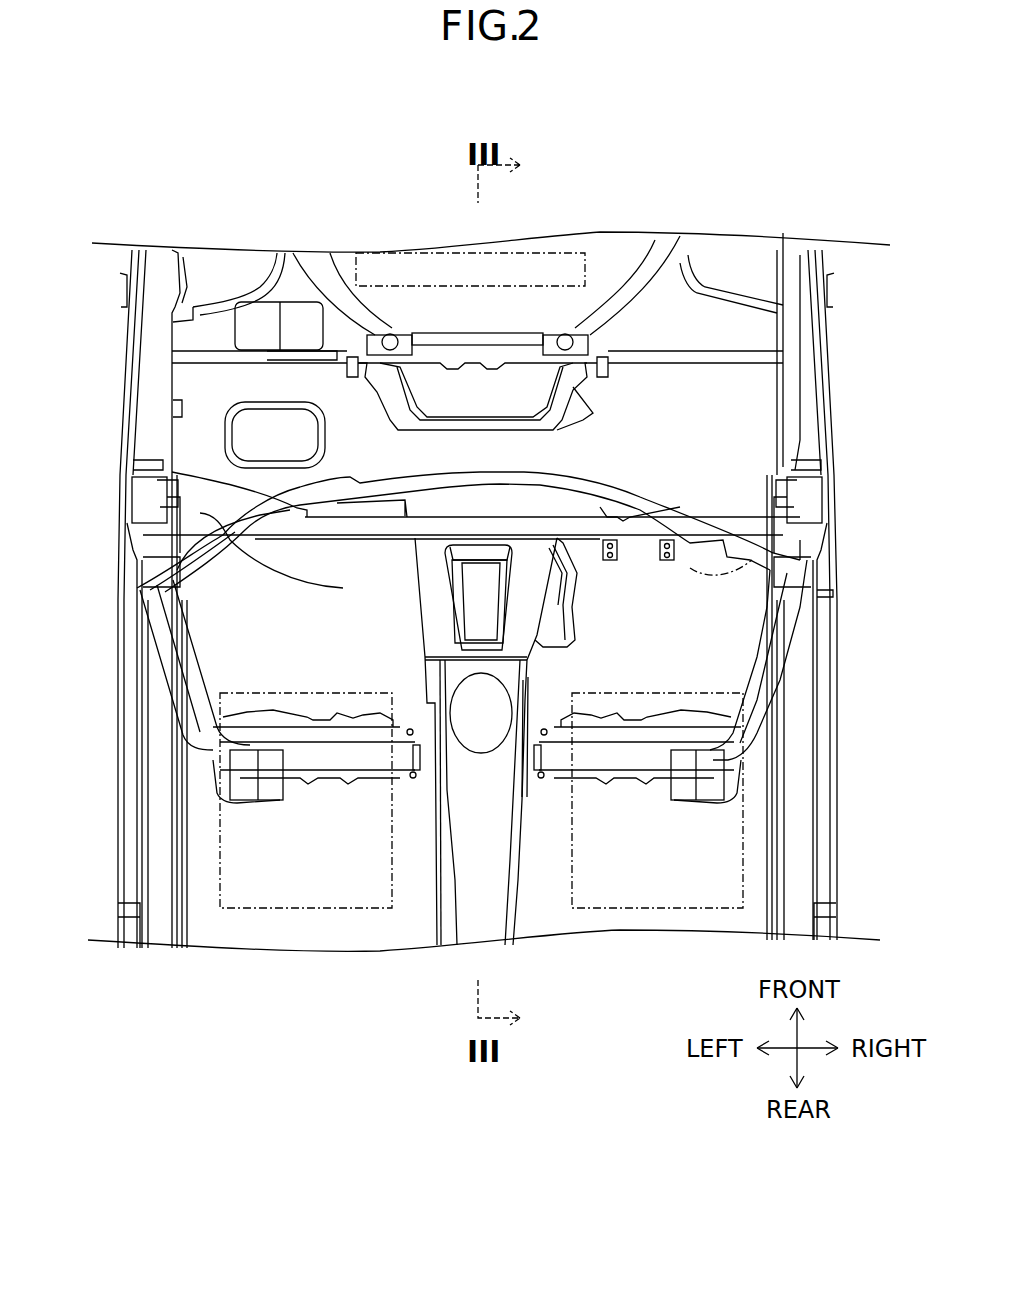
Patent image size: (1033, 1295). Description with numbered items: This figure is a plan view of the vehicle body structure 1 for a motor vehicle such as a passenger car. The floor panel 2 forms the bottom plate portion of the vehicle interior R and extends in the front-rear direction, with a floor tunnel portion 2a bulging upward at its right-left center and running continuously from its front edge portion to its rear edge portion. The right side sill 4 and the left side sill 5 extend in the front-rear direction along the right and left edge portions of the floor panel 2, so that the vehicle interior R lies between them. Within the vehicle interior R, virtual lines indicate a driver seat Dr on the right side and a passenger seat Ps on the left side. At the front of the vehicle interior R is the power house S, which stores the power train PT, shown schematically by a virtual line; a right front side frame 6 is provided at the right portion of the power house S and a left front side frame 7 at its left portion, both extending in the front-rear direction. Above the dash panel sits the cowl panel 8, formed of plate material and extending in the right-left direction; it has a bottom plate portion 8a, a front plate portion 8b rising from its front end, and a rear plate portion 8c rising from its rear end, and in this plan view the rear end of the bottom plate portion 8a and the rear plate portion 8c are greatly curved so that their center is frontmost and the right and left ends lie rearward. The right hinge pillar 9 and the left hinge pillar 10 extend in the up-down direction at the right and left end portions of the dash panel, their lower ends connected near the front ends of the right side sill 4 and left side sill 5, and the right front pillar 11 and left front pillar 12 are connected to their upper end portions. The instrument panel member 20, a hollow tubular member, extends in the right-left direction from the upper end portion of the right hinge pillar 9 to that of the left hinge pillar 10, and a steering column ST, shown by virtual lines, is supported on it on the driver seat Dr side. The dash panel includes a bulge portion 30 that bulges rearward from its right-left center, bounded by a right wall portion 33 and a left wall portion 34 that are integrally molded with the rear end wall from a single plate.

The vehicle body structure 1 is at (866, 311).
The floor panel 2 is at (208, 664).
The floor tunnel portion 2a is at (472, 907).
The right side sill 4 is at (797, 778).
The left side sill 5 is at (157, 777).
The right front side frame 6 is at (615, 325).
The left front side frame 7 is at (377, 340).
The cowl panel 8 is at (181, 440).
The bottom plate portion 8a is at (203, 397).
The front plate portion 8b is at (223, 360).
The rear plate portion 8c is at (200, 513).
The right hinge pillar 9 is at (837, 570).
The left hinge pillar 10 is at (120, 553).
The right front pillar 11 is at (790, 673).
The left front pillar 12 is at (160, 670).
The instrument panel member 20 is at (645, 537).
The bulge portion 30 is at (430, 552).
The right wall portion 33 is at (640, 497).
The left wall portion 34 is at (172, 472).
The power train PT is at (365, 283).
The power house S is at (612, 283).
The steering column ST is at (807, 523).
The passenger seat Ps is at (217, 857).
The driver seat Dr is at (743, 850).
The vehicle interior R is at (617, 920).